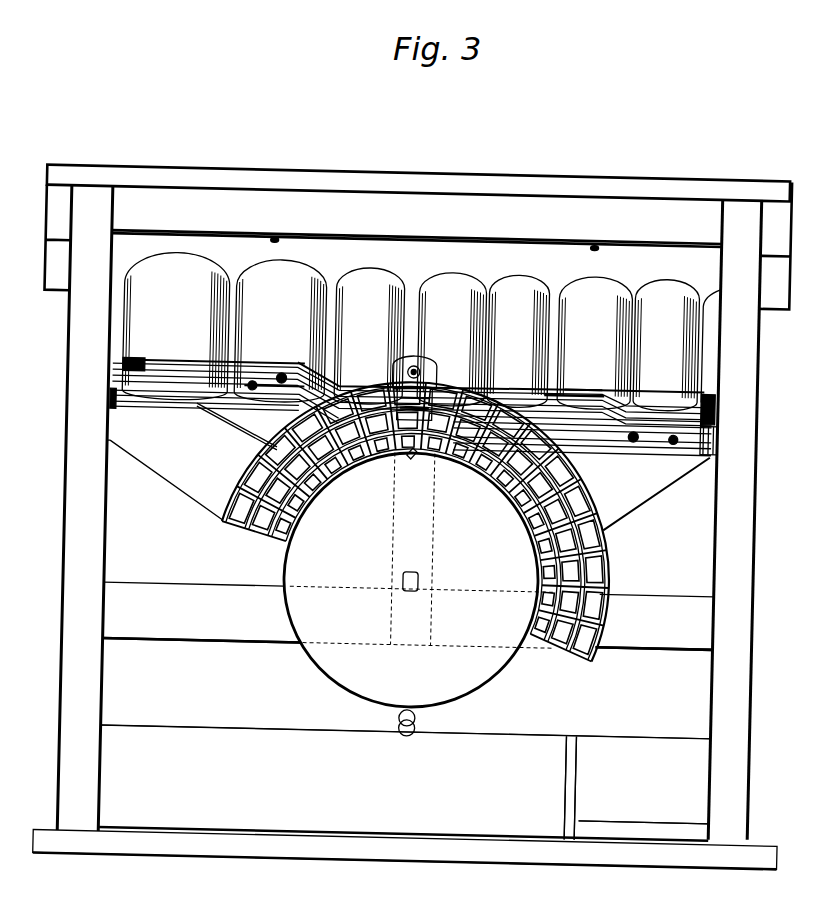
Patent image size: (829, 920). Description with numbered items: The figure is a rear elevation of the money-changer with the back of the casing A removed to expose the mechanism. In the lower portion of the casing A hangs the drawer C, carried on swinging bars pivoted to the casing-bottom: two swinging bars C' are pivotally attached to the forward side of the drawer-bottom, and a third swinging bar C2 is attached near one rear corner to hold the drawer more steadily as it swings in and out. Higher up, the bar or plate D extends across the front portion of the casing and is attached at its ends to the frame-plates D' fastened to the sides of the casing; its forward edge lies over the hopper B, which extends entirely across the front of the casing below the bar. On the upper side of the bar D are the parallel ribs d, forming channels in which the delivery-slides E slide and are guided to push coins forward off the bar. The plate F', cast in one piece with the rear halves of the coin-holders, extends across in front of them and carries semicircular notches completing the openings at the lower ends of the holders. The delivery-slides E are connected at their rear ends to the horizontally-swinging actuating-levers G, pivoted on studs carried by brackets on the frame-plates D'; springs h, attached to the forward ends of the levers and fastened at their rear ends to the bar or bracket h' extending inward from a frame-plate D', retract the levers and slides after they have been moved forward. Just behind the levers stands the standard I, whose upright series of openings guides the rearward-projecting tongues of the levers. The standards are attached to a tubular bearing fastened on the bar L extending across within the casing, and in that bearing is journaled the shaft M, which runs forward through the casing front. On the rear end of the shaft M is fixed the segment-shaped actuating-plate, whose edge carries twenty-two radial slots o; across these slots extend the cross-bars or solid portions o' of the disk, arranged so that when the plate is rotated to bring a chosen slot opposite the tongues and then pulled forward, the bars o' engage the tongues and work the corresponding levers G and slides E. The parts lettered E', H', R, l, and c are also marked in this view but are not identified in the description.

The casing A is at (85, 508).
The hopper B is at (164, 481).
The drawer C is at (404, 783).
The swinging bars C' is at (637, 802).
The third swinging bar C2 is at (345, 836).
The bar or plate D is at (427, 420).
The frame-plates D' is at (392, 448).
The delivery-slides E is at (396, 394).
The rail end block E' is at (724, 396).
The plate F' is at (421, 331).
The actuating levers G is at (225, 436).
The stop block H' is at (133, 355).
The standard I is at (430, 368).
The bar L is at (408, 628).
The shaft M is at (407, 592).
The bracket R is at (393, 376).
The parallel ribs d is at (560, 391).
The springs h is at (457, 415).
The bar or bracket h' is at (460, 415).
The link bar l is at (215, 418).
The radial slots o is at (412, 594).
The cross-bars o' is at (416, 514).
The pin c is at (405, 458).